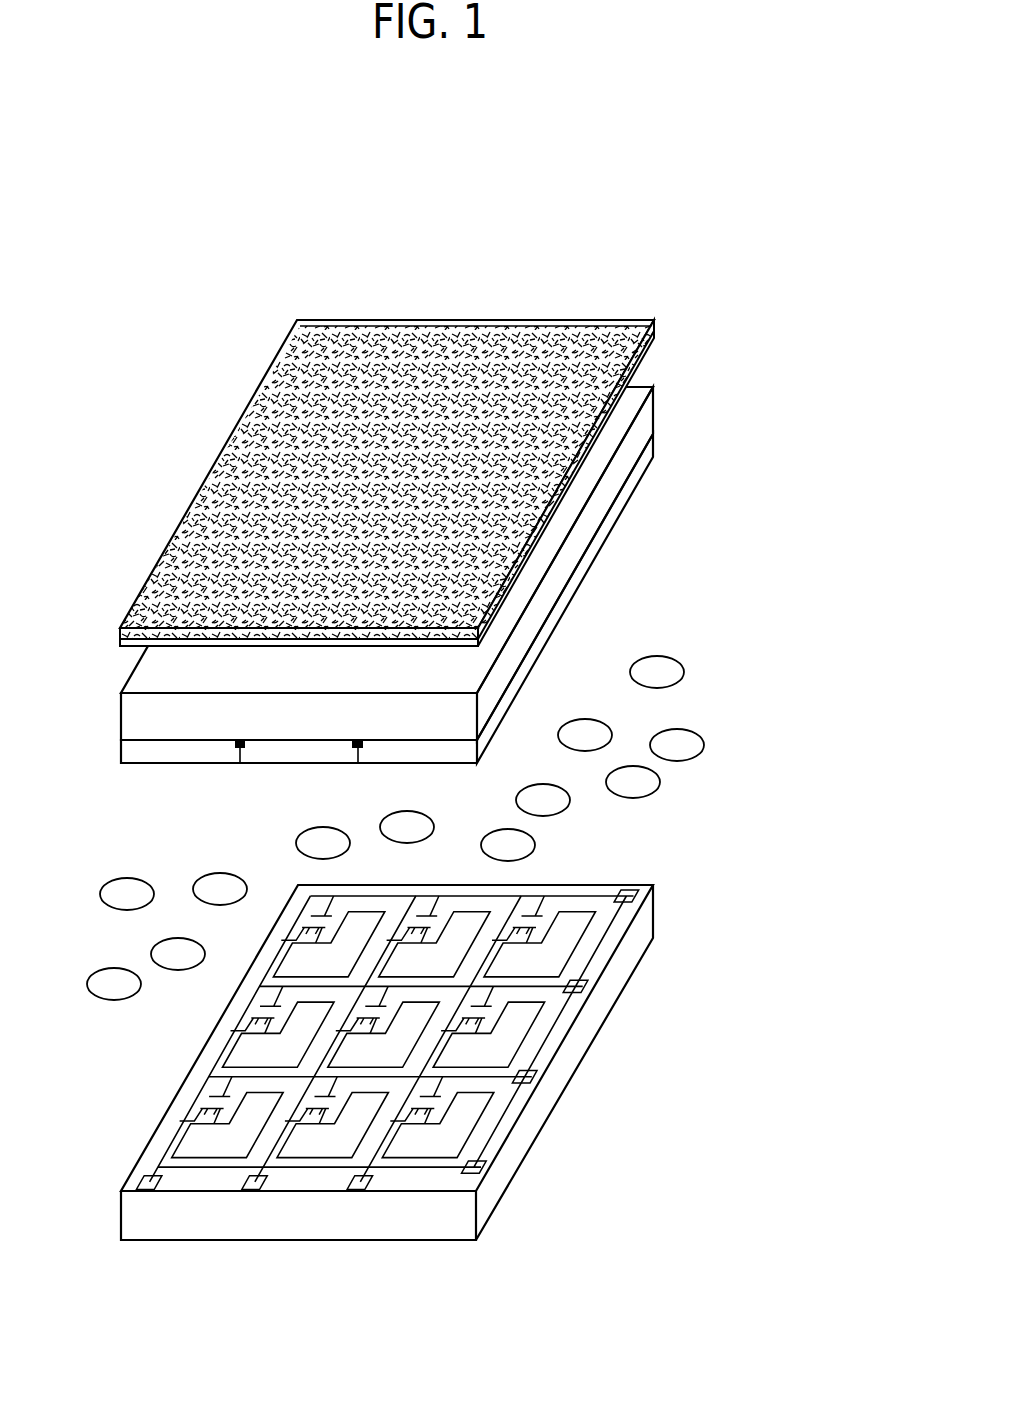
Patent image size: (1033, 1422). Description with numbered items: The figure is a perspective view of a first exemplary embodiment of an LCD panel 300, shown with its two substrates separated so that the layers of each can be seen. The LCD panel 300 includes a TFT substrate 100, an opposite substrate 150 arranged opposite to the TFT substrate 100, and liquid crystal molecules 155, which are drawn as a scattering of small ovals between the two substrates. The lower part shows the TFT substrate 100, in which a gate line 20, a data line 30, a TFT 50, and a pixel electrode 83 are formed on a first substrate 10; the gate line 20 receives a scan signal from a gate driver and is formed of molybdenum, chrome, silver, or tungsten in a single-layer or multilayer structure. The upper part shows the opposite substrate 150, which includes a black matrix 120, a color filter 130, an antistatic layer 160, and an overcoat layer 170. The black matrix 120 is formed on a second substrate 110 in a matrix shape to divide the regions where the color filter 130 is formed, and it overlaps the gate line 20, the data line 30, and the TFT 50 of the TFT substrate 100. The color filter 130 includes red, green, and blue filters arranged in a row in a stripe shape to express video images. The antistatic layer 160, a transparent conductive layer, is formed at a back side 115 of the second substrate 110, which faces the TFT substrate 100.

The LCD panel 300 is at (170, 202).
The opposite substrate 150 is at (766, 420).
The overcoat layer 170 is at (654, 321).
The antistatic layer 160 is at (648, 334).
The back side 115 is at (641, 389).
The second substrate 110 is at (651, 414).
The color filter 130 is at (652, 448).
The black matrix 120 is at (237, 749).
The liquid crystal molecules 155 is at (665, 670).
The TFT substrate 100 is at (722, 866).
The first substrate 10 is at (654, 916).
The gate line 20 is at (204, 1166).
The data line 30 is at (168, 1129).
The TFT 50 is at (311, 1126).
The pixel electrode 83 is at (474, 1129).